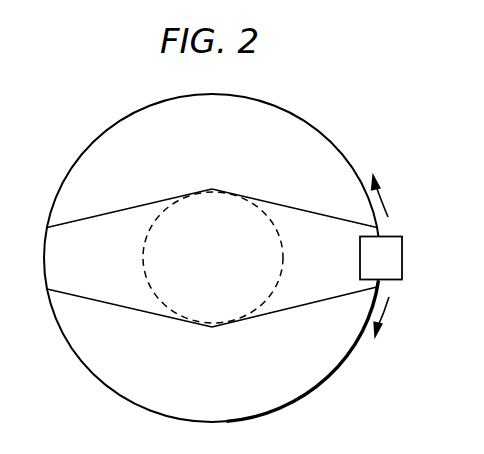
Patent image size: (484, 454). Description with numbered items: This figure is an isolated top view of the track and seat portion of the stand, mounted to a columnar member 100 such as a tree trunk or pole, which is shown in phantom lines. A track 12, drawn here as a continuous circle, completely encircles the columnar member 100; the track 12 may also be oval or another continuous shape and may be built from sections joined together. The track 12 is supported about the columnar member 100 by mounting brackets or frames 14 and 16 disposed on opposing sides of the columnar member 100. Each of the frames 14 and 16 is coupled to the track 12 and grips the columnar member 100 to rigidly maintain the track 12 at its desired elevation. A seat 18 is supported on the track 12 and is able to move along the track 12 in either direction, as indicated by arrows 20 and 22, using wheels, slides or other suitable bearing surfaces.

The track 12 is at (325, 136).
The columnar member 100 is at (262, 200).
The mounting frame 16 is at (89, 222).
The mounting frame 14 is at (337, 219).
The seat 18 is at (403, 245).
The arrow 22 is at (382, 203).
The arrow 20 is at (387, 311).